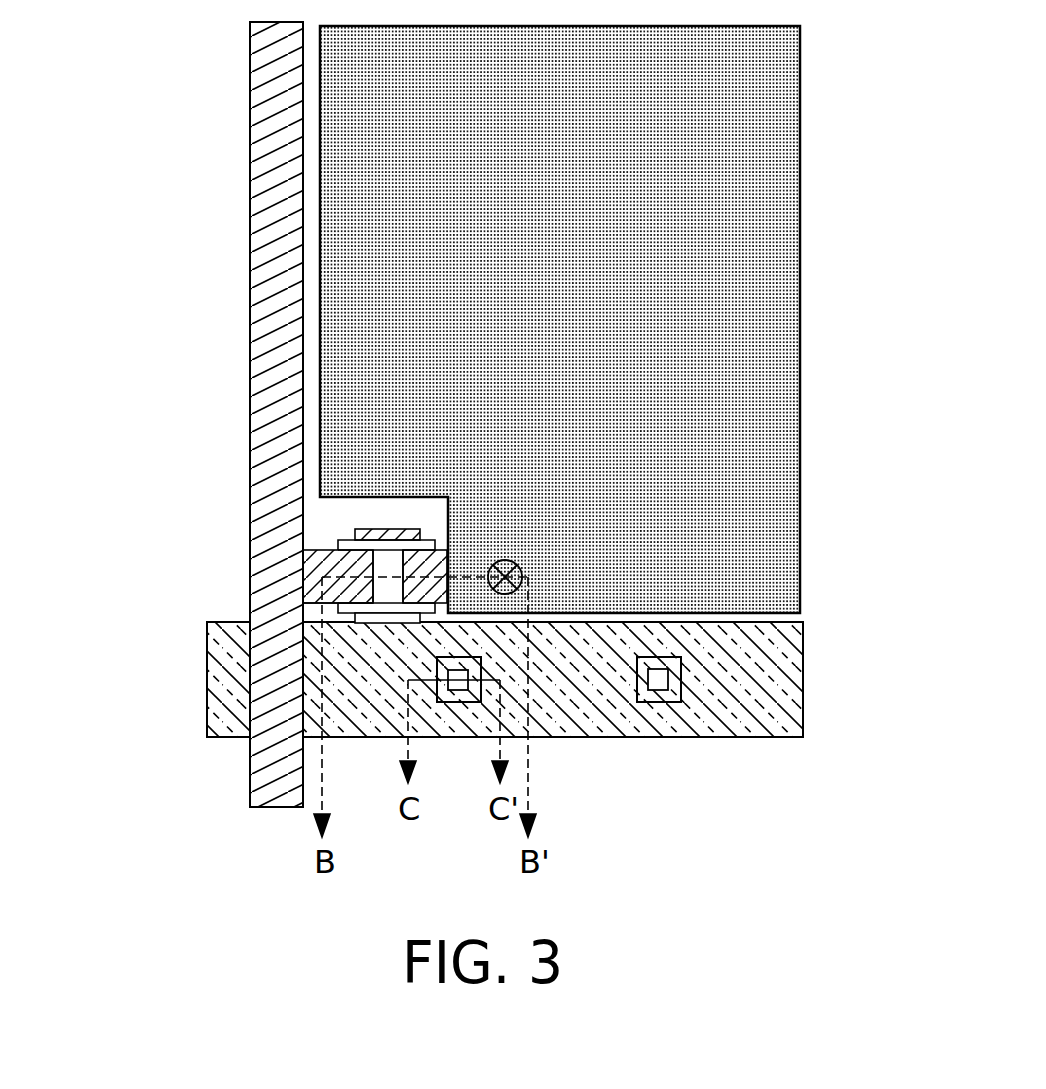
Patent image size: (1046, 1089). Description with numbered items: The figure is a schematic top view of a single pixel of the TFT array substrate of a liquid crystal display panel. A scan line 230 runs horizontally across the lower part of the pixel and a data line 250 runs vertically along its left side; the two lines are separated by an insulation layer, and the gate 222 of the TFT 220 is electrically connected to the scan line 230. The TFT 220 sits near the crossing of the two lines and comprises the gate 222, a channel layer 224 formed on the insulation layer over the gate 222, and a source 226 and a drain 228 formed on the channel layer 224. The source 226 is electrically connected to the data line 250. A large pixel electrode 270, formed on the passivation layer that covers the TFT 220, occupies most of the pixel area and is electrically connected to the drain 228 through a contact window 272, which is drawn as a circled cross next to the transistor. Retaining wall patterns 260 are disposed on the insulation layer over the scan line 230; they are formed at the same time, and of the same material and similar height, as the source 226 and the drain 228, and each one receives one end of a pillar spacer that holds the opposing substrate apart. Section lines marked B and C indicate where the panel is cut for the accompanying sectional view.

The TFT 220 is at (226, 499).
The gate 222 is at (383, 532).
The channel layer 224 is at (340, 544).
The source 226 is at (355, 568).
The drain 228 is at (330, 592).
The scan line 230 is at (785, 684).
The data line 250 is at (268, 238).
The retaining wall pattern 260 is at (459, 702).
The pixel electrode 270 is at (740, 350).
The contact window 272 is at (522, 573).